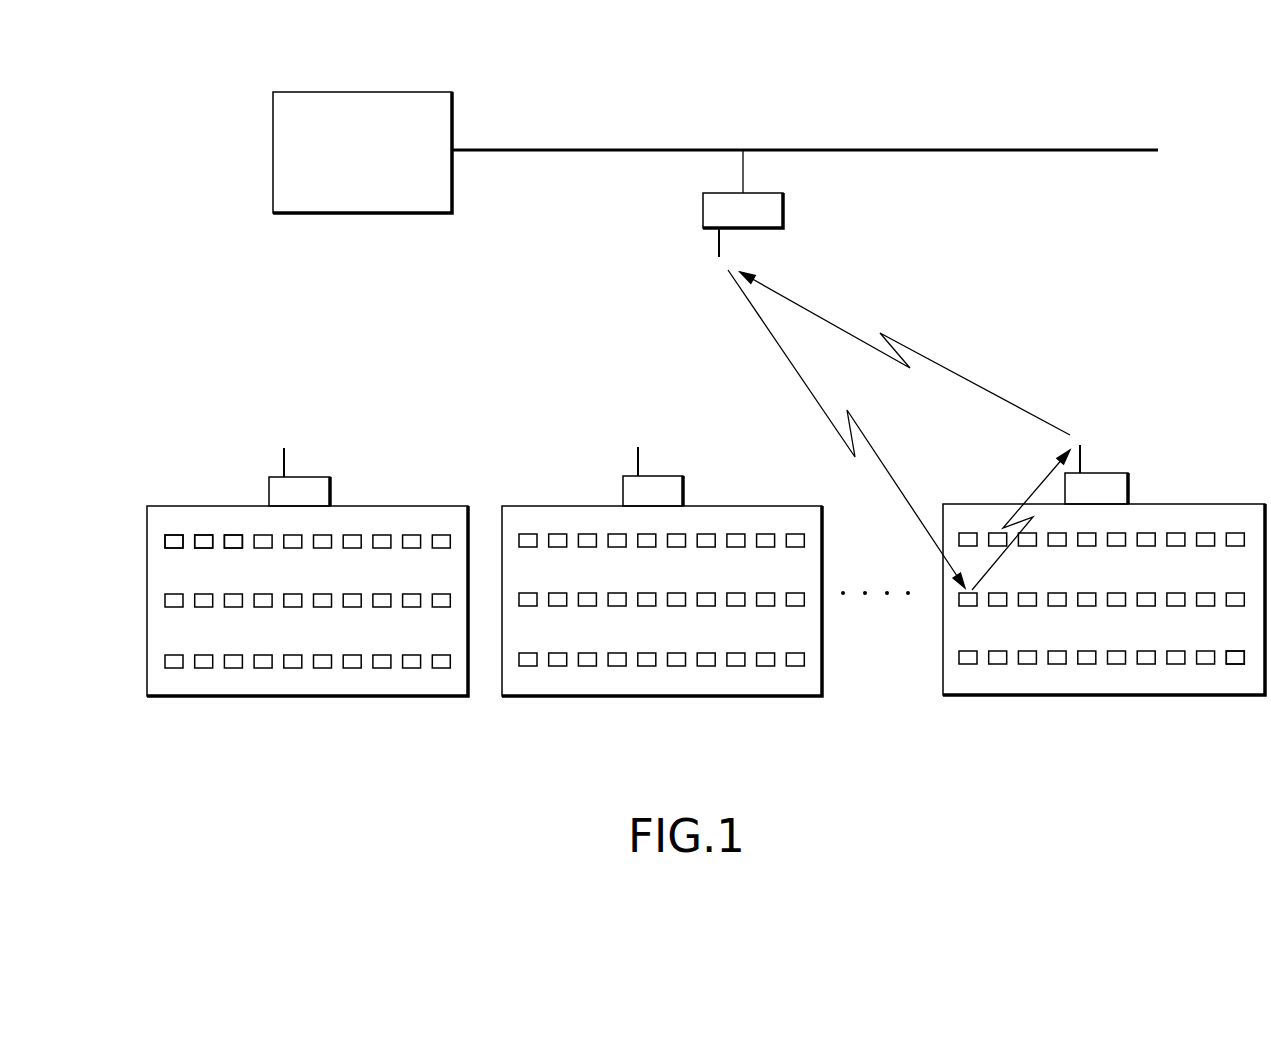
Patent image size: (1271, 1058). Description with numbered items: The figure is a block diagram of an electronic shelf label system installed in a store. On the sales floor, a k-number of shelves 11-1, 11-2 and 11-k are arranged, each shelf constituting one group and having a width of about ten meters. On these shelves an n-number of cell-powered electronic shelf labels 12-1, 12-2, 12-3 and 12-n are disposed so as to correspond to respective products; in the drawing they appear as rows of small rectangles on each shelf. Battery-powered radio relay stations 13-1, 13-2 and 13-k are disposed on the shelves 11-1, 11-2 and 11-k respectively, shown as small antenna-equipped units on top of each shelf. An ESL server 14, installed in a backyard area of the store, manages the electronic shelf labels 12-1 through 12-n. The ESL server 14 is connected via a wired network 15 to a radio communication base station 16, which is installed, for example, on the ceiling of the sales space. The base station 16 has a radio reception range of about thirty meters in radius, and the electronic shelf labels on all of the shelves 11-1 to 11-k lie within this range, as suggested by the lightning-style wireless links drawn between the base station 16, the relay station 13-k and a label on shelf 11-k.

The shelf 11-1 is at (402, 505).
The shelf 11-2 is at (757, 505).
The shelf 11-k is at (1198, 503).
The electronic shelf label 12-1 is at (177, 534).
The electronic shelf label 12-2 is at (208, 534).
The electronic shelf label 12-3 is at (237, 534).
The electronic shelf label 12-n is at (1240, 665).
The radio relay station 13-1 is at (320, 476).
The radio relay station 13-2 is at (672, 475).
The radio relay station 13-k is at (1113, 472).
The ESL server 14 is at (365, 92).
The wired network 15 is at (582, 149).
The radio communication base station 16 is at (783, 207).